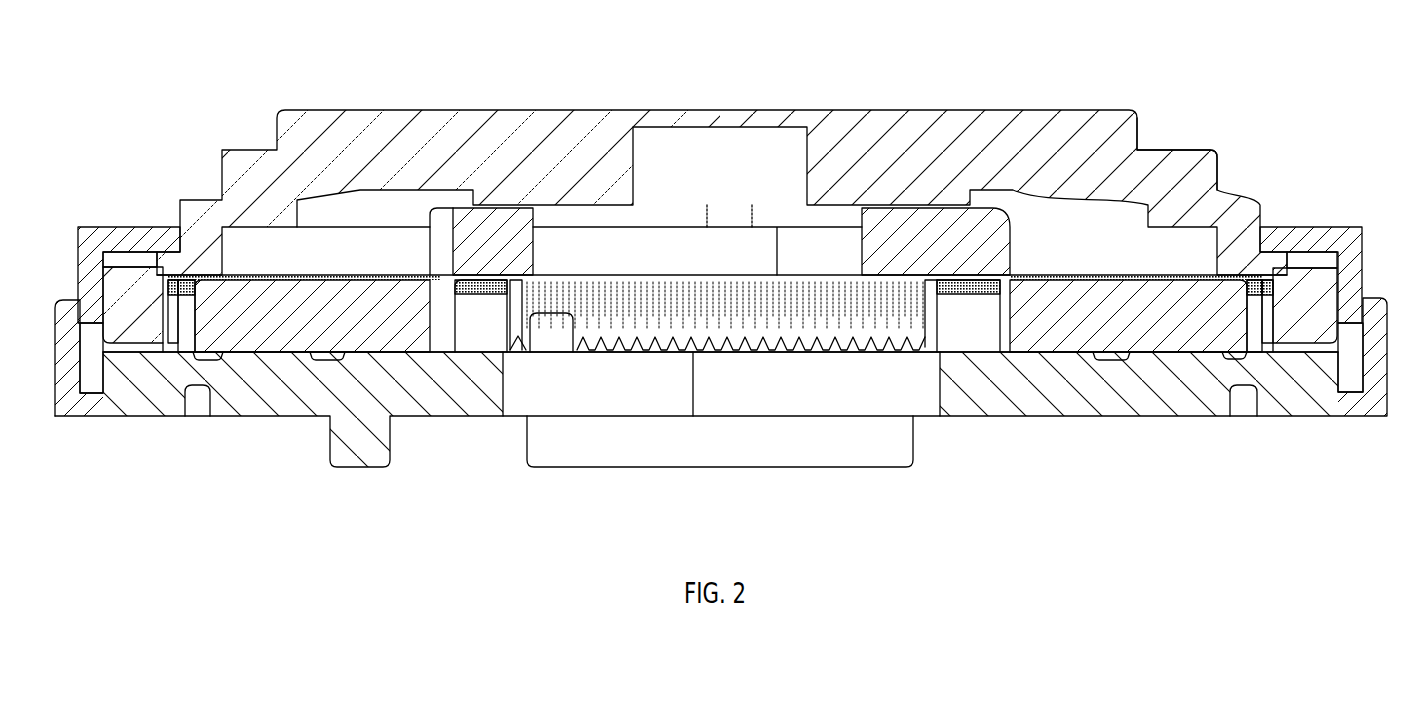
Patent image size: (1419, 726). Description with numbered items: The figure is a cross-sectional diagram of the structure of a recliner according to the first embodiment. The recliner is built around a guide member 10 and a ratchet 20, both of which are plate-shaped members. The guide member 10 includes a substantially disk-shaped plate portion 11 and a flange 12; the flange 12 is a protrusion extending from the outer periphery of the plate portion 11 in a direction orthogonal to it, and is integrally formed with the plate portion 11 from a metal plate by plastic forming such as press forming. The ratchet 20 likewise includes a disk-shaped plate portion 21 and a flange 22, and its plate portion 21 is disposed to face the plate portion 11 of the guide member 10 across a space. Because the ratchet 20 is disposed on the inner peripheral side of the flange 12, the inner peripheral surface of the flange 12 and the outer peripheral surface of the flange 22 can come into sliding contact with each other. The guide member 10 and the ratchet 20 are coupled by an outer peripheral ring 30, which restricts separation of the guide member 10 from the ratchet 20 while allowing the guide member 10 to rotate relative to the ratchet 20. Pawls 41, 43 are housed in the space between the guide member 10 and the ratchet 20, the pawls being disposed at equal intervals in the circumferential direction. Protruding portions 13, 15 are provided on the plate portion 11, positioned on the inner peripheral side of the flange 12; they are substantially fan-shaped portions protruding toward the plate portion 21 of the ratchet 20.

The guide member 10 is at (716, 369).
The plate portion 11 is at (1052, 422).
The flange 12 is at (70, 332).
The protruding portion 13 is at (478, 330).
The protruding portion 15 is at (970, 330).
The ratchet 20 is at (660, 165).
The plate portion 21 is at (1108, 108).
The flange 22 is at (131, 282).
The outer peripheral ring 30 is at (107, 224).
The pawl 41 is at (267, 303).
The pawl 43 is at (1163, 303).